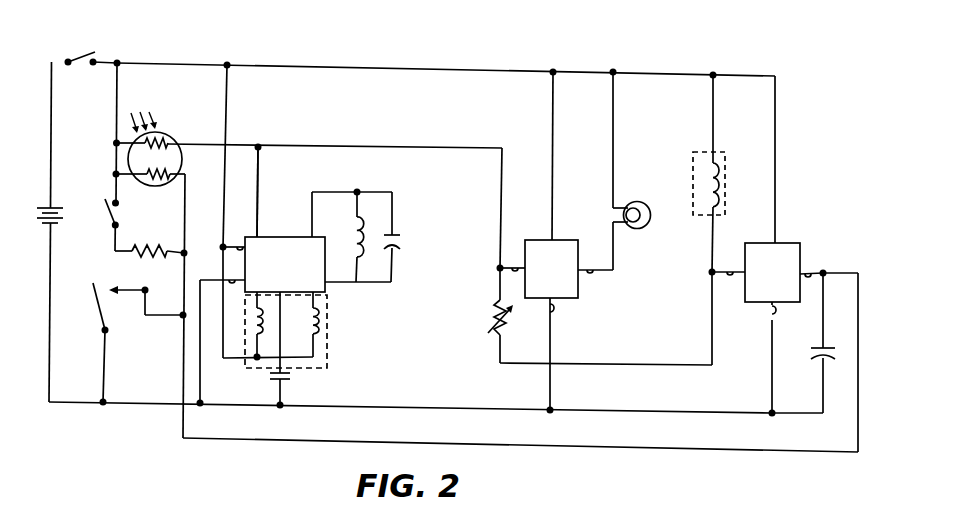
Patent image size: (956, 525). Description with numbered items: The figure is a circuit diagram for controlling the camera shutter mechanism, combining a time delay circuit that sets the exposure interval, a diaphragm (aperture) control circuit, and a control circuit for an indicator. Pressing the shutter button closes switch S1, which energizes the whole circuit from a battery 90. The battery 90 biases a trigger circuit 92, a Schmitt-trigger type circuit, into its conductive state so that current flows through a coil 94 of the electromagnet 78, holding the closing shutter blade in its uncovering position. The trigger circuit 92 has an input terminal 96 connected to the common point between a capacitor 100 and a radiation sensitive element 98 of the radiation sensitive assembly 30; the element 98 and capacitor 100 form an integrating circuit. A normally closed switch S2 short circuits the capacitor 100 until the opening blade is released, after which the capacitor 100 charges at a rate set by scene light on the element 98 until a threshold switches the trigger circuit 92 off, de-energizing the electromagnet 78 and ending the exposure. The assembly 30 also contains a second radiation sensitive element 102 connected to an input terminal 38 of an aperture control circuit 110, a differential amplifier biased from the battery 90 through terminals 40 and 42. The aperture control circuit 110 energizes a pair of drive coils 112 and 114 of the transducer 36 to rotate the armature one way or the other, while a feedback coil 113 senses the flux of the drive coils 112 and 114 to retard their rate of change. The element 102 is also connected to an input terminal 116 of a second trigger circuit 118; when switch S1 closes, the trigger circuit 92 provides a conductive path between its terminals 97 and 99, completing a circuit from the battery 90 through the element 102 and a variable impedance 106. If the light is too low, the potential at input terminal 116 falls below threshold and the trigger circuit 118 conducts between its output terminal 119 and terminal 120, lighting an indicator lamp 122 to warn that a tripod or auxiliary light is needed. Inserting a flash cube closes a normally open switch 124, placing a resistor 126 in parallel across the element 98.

The switch S1 is at (80, 52).
The switch S2 is at (94, 303).
The radiation sensitive assembly 30 is at (191, 160).
The transducer 36 is at (327, 353).
The input terminal 38 is at (257, 232).
The terminal 40 is at (240, 245).
The terminal 42 is at (232, 282).
The electromagnet 78 is at (693, 158).
The battery 90 is at (60, 213).
The trigger circuit 92 is at (765, 253).
The coil 94 is at (719, 178).
The input terminal 96 is at (809, 274).
The terminal 97 is at (730, 272).
The radiation sensitive element 98 is at (149, 184).
The terminal 99 is at (774, 320).
The capacitor 100 is at (813, 352).
The second radiation sensitive element 102 is at (165, 136).
The variable impedance 106 is at (490, 316).
The aperture control circuit 110 is at (278, 254).
The drive coil 112 is at (252, 323).
The feedback coil 113 is at (354, 230).
The drive coil 114 is at (306, 308).
The input terminal 116 is at (515, 266).
The trigger circuit 118 is at (563, 278).
The output terminal 119 is at (553, 317).
The terminal 120 is at (590, 268).
The indicator lamp 122 is at (643, 202).
The switch 124 is at (108, 221).
The resistor 126 is at (142, 256).